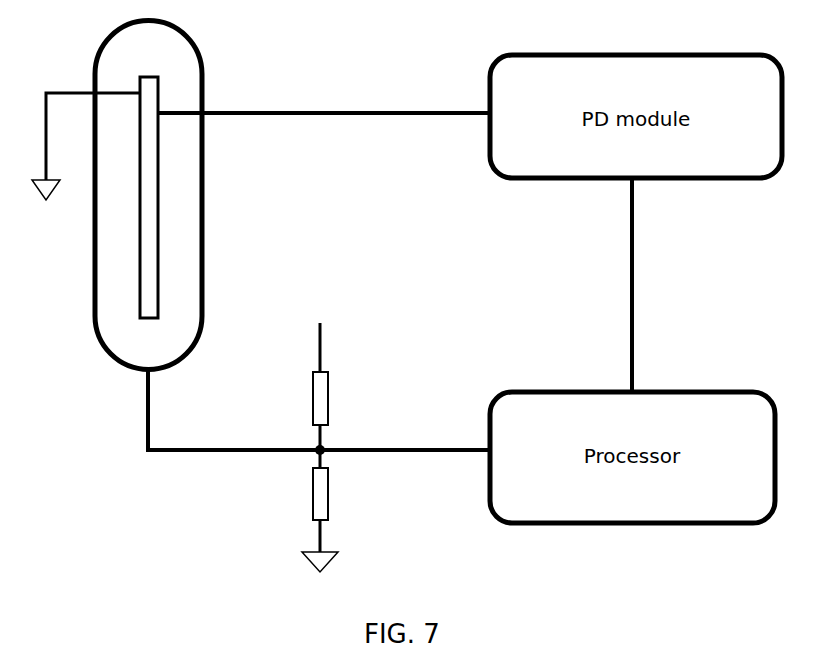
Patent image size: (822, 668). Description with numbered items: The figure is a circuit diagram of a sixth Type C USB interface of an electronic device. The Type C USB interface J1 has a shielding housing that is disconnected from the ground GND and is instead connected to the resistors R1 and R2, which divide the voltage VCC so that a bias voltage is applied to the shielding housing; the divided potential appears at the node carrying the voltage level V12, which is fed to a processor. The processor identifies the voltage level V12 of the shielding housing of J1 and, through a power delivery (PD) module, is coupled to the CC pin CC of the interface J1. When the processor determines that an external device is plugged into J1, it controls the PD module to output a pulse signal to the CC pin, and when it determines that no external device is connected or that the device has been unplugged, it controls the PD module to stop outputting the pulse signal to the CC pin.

The Type C USB interface J1 is at (138, 190).
The ground GND is at (81, 164).
The CC pin CC is at (324, 96).
The voltage Vcc VCC is at (310, 333).
The resistor R1 is at (301, 411).
The resistor R2 is at (306, 511).
The voltage level V12 is at (350, 436).